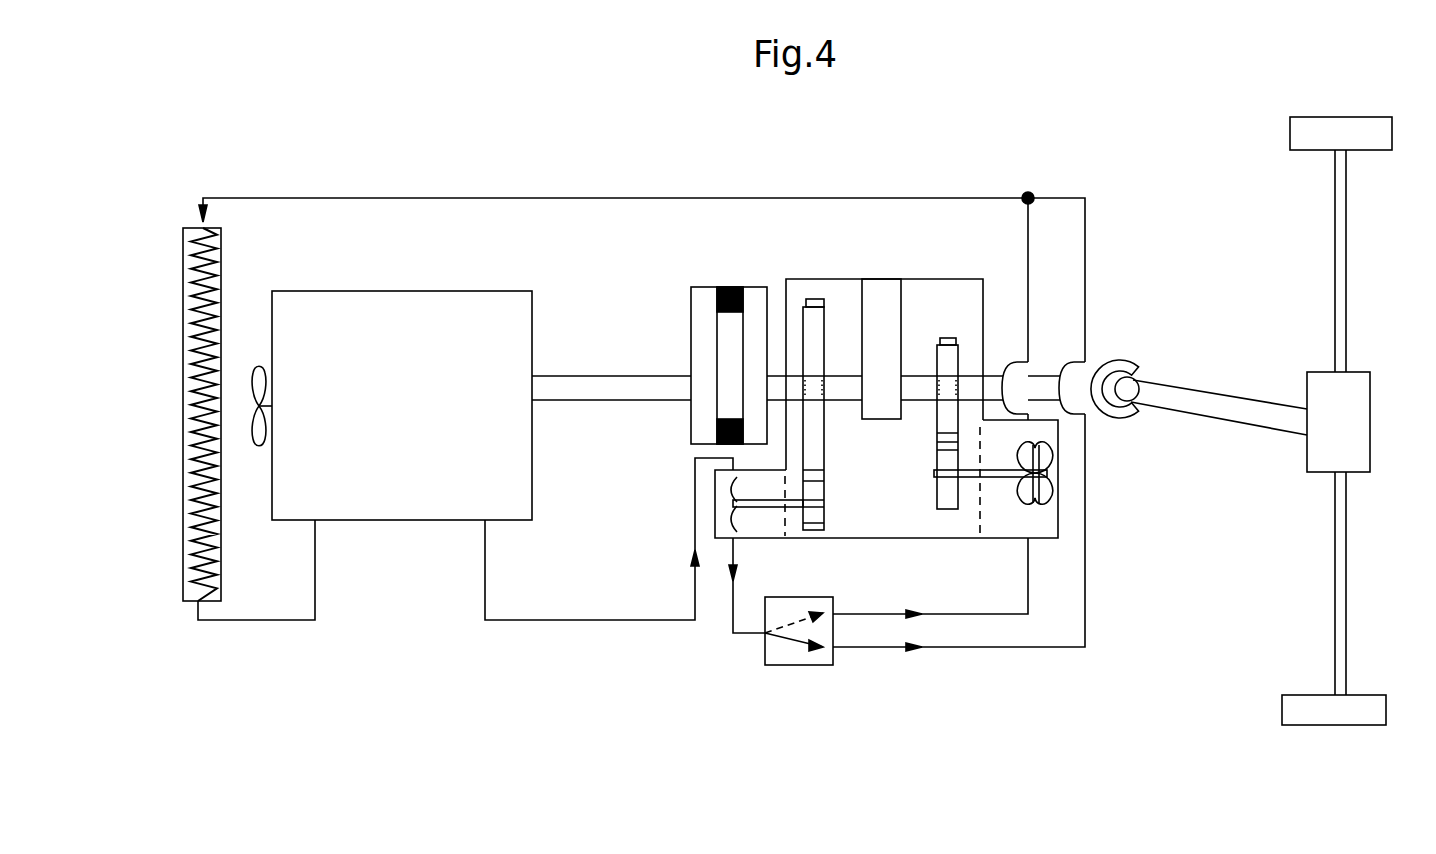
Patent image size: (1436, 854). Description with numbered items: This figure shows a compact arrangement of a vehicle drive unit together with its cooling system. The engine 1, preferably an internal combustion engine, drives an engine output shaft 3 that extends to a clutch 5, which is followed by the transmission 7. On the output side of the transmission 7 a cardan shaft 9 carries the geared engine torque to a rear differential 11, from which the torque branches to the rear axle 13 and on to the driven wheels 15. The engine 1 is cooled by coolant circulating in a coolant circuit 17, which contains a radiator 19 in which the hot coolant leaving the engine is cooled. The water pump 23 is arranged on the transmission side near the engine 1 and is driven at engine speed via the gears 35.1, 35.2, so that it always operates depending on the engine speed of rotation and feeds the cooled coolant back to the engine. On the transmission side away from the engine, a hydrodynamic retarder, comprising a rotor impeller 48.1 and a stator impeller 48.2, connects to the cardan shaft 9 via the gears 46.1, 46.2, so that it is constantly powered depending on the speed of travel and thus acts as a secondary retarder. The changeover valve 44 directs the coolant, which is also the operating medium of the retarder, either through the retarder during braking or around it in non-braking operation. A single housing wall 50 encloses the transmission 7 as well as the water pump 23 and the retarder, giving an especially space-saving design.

The engine 1 is at (375, 507).
The engine output shaft 3 is at (632, 387).
The clutch 5 is at (705, 417).
The transmission 7 is at (880, 298).
The cardan shaft 9 is at (1235, 412).
The rear differential 11 is at (1342, 440).
The rear axle 13 is at (1335, 562).
The driven wheels 15 is at (1345, 712).
The coolant circuit 17 is at (680, 198).
The radiator 19 is at (190, 517).
The water pump 23 is at (757, 526).
The gear 35.1 is at (812, 461).
The gear 35.2 is at (812, 518).
The changeover valve 44 is at (782, 657).
The gear 46.1 is at (947, 490).
The gear 46.2 is at (950, 362).
The rotor impeller 48.1 is at (1040, 457).
The stator impeller 48.2 is at (1043, 472).
The housing wall 50 is at (828, 278).